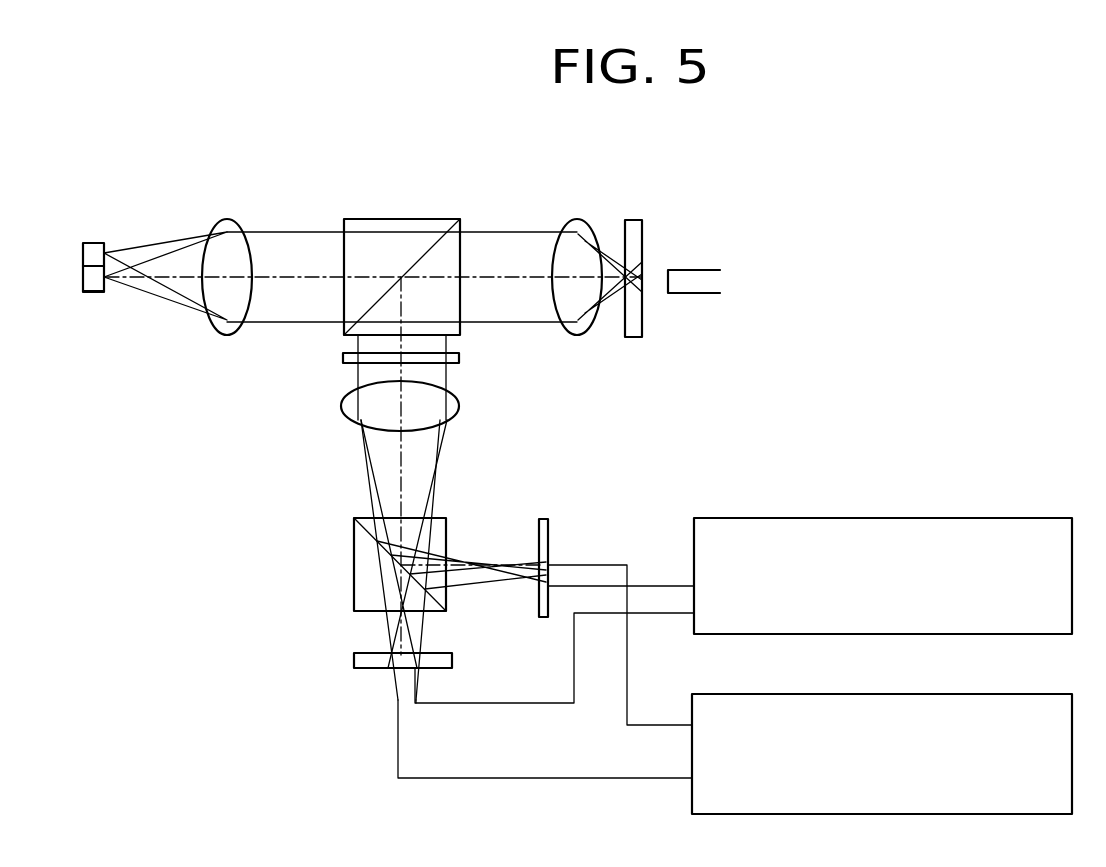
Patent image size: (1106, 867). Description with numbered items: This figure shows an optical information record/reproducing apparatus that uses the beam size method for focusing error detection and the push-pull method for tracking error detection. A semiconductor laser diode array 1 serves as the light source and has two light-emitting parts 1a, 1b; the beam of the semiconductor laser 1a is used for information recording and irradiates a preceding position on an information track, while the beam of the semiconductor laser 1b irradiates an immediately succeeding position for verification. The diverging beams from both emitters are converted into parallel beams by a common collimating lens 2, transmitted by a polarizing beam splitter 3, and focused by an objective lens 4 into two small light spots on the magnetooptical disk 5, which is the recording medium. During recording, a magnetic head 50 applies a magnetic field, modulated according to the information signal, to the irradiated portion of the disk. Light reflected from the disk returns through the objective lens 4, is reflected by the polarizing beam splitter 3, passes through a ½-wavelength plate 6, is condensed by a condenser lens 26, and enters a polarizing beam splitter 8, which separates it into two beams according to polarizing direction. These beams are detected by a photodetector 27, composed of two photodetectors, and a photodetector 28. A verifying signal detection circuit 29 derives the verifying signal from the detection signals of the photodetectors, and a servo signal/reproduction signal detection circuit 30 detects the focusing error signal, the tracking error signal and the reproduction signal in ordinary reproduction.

The semiconductor laser diode array 1 is at (65, 243).
The light-emitting part 1a is at (97, 293).
The light-emitting part 1b is at (93, 243).
The collimating lens 2 is at (227, 219).
The polarizing beam splitter 3 is at (433, 219).
The objective lens 4 is at (577, 220).
The magnetooptical disk 5 is at (638, 220).
The magnetic head 50 is at (699, 270).
The ½-wavelength plate 6 is at (459, 360).
The condenser lens 26 is at (457, 412).
The polarizing beam splitter 8 is at (447, 518).
The photodetector 28 is at (547, 515).
The photodetector 27 is at (354, 655).
The verifying signal detection circuit 29 is at (945, 517).
The servo signal/reproduction signal detection circuit 30 is at (937, 694).